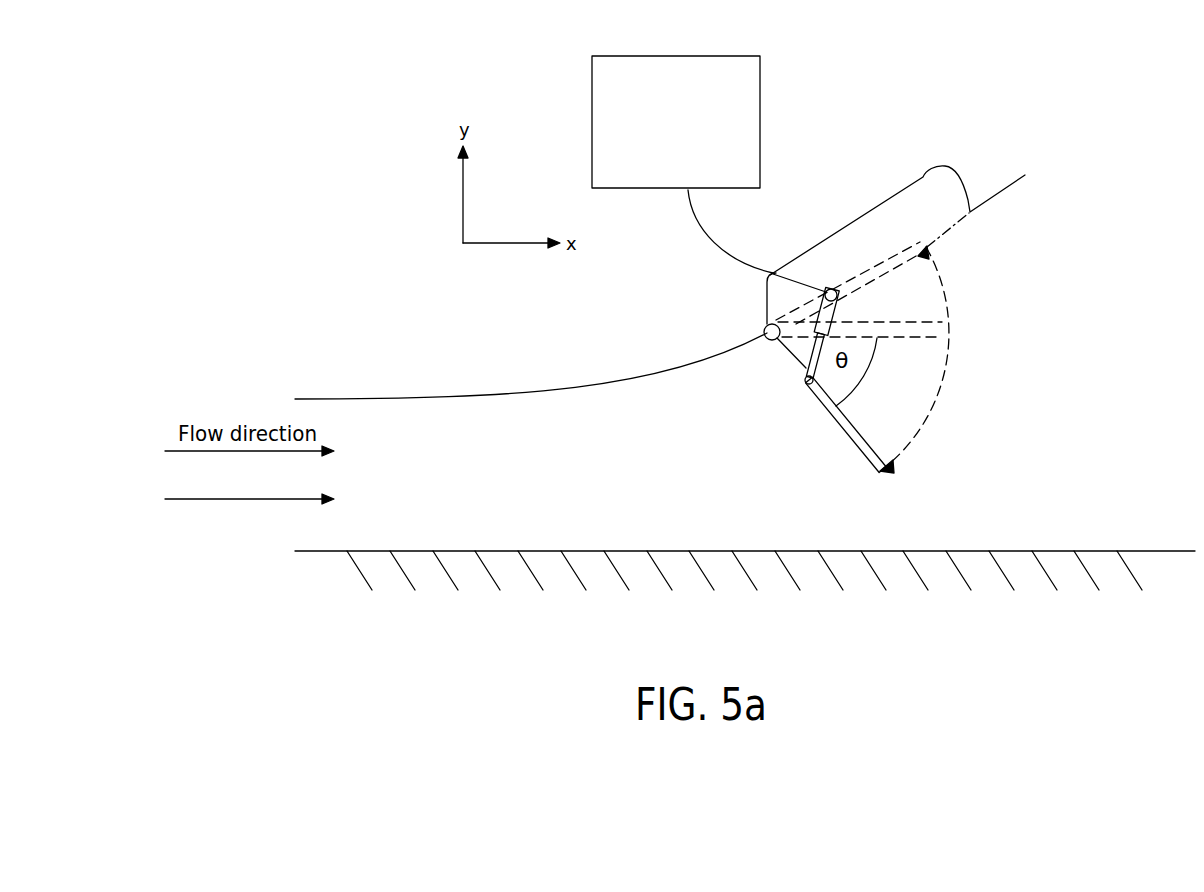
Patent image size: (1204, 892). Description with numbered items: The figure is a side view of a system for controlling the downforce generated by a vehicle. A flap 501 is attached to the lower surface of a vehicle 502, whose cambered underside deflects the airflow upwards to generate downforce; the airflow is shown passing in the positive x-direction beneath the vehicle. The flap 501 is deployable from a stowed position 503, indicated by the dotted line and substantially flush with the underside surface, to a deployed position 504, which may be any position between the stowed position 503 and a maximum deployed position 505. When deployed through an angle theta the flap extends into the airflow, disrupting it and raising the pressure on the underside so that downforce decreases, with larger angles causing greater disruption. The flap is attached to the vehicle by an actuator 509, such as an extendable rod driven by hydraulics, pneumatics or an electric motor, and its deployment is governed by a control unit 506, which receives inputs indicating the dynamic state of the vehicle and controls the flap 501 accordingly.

The flap 501 is at (834, 422).
The vehicle 502 is at (522, 400).
The stowed position 503 is at (864, 268).
The deployed position 504 is at (907, 340).
The maximum deployed position 505 is at (878, 476).
The control unit 506 is at (682, 164).
The actuator 509 is at (796, 356).